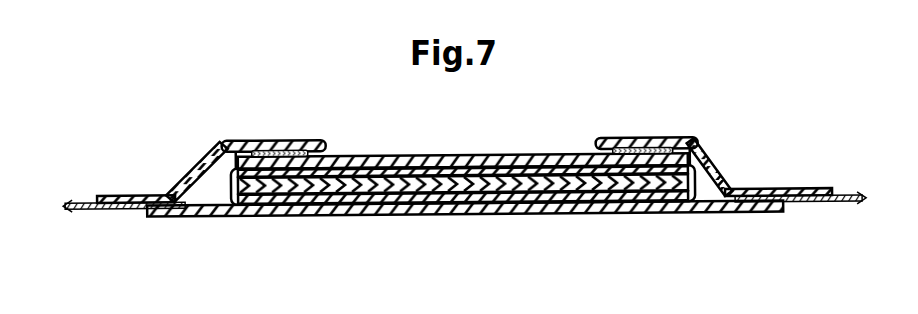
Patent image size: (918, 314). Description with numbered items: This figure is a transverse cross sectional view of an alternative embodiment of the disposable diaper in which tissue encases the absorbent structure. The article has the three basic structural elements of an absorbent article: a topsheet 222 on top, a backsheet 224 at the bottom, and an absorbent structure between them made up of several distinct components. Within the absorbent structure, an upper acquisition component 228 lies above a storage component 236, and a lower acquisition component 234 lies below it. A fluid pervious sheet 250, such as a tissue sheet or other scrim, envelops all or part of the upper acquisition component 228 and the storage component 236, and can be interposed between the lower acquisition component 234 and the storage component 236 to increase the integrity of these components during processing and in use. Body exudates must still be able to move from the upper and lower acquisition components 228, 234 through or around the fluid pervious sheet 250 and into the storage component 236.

The topsheet 222 is at (475, 155).
The backsheet 224 is at (587, 213).
The upper acquisition component 228 is at (403, 156).
The lower acquisition component 234 is at (485, 207).
The storage component 236 is at (350, 192).
The fluid pervious sheet 250 is at (700, 178).